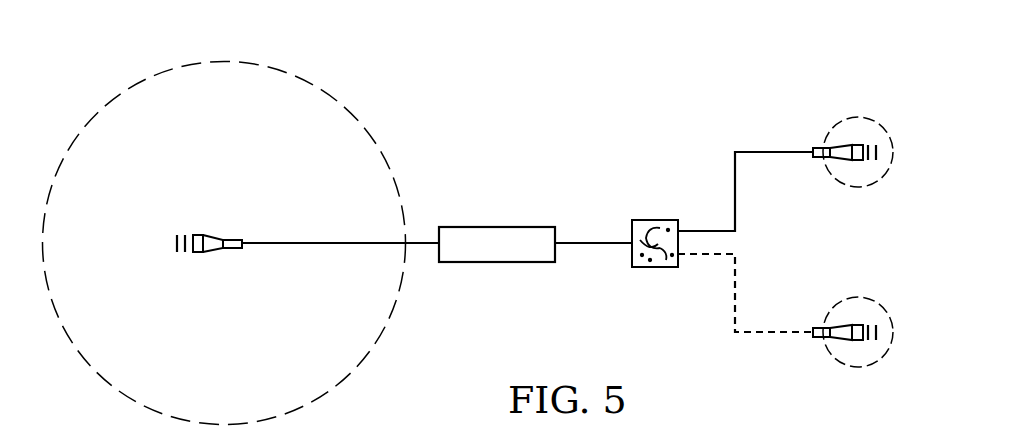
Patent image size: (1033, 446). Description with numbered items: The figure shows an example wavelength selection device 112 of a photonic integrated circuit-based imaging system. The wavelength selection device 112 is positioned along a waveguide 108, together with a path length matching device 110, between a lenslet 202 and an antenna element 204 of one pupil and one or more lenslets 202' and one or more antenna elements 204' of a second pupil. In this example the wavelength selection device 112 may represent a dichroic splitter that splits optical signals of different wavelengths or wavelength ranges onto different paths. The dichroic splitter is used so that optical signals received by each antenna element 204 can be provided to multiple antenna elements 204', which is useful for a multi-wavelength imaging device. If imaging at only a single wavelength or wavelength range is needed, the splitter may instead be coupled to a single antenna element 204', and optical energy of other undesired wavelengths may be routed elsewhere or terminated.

The lenslet 202 is at (224, 217).
The antenna element 204 is at (203, 215).
The path length matching device 110 is at (497, 226).
The waveguide 108 is at (593, 244).
The wavelength selection device 112 is at (655, 220).
The lenslet 202' is at (858, 123).
The antenna element 204' is at (861, 194).